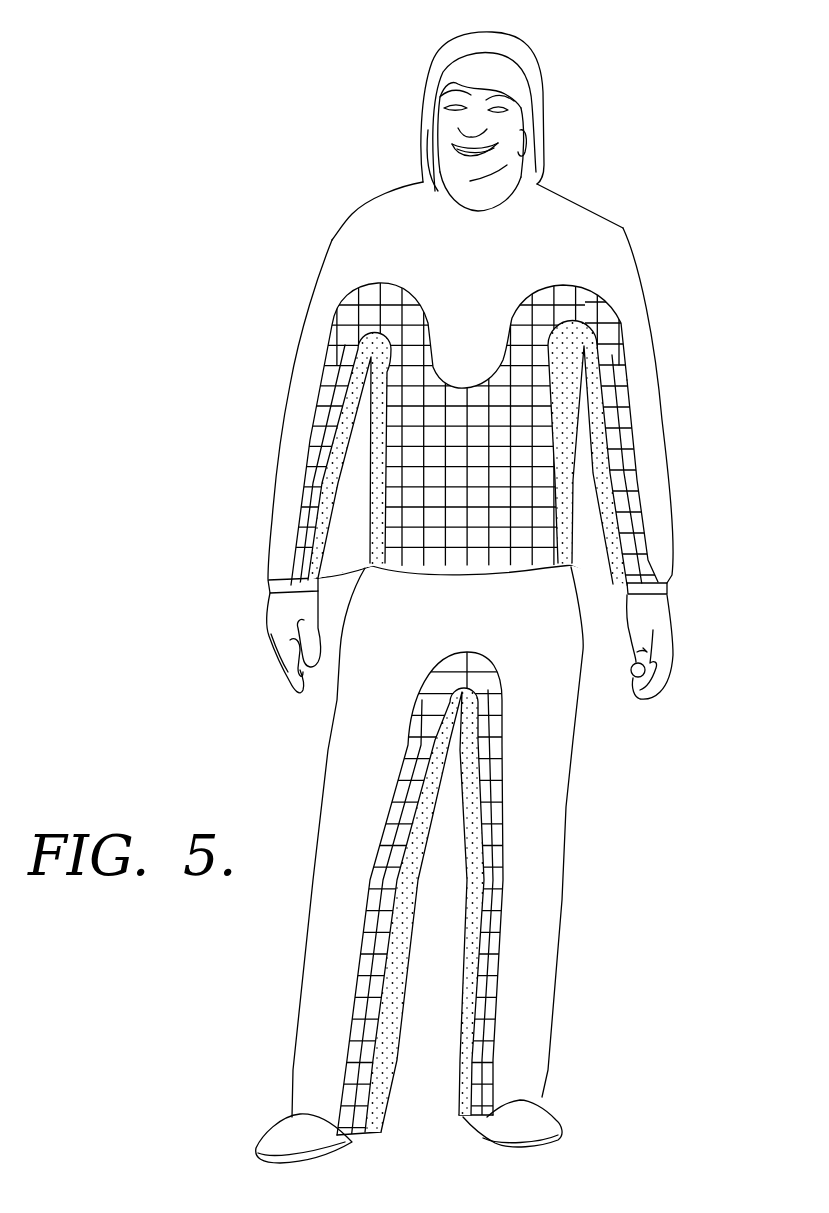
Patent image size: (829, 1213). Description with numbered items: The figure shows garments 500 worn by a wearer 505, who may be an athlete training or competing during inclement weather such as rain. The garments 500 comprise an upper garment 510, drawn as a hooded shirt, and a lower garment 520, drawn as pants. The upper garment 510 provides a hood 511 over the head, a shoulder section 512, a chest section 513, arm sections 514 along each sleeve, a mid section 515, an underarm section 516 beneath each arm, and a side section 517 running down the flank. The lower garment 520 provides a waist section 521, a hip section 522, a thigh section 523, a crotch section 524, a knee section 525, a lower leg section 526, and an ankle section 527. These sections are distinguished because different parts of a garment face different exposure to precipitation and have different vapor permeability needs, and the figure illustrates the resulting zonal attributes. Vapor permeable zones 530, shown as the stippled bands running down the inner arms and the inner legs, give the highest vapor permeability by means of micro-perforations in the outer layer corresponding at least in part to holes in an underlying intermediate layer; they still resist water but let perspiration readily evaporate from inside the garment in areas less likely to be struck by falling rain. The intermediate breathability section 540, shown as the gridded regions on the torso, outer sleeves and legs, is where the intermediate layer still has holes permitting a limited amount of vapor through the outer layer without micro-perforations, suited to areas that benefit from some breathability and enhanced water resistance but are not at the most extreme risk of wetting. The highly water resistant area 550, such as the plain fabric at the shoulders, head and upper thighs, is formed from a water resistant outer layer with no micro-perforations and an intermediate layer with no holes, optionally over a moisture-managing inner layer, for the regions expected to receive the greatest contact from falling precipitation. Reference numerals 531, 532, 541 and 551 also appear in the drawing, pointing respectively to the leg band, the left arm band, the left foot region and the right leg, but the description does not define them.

The garments 500 is at (681, 91).
The wearer 505 is at (512, 125).
The upper garment 510 is at (566, 192).
The hood 511 is at (436, 48).
The shoulder section 512 is at (394, 219).
The chest section 513 is at (501, 303).
The arm sections 514 is at (647, 358).
The mid section 515 is at (522, 437).
The underarm section 516 is at (375, 353).
The side section 517 is at (370, 452).
The lower garment 520 is at (557, 737).
The waist section 521 is at (477, 569).
The hip section 522 is at (347, 578).
The thigh section 523 is at (364, 732).
The crotch section 524 is at (469, 699).
The knee section 525 is at (524, 853).
The lower leg section 526 is at (524, 982).
The ankle section 527 is at (524, 1087).
The vapor permeable zones 530 is at (567, 482).
The leg heating element 531 is at (378, 1101).
The left arm heating element 532 is at (376, 406).
The intermediate breathability section 540 is at (404, 512).
The left footwear 541 is at (312, 1091).
The highly water resistant area 550 is at (624, 240).
The right leg of lower garment 551 is at (563, 672).